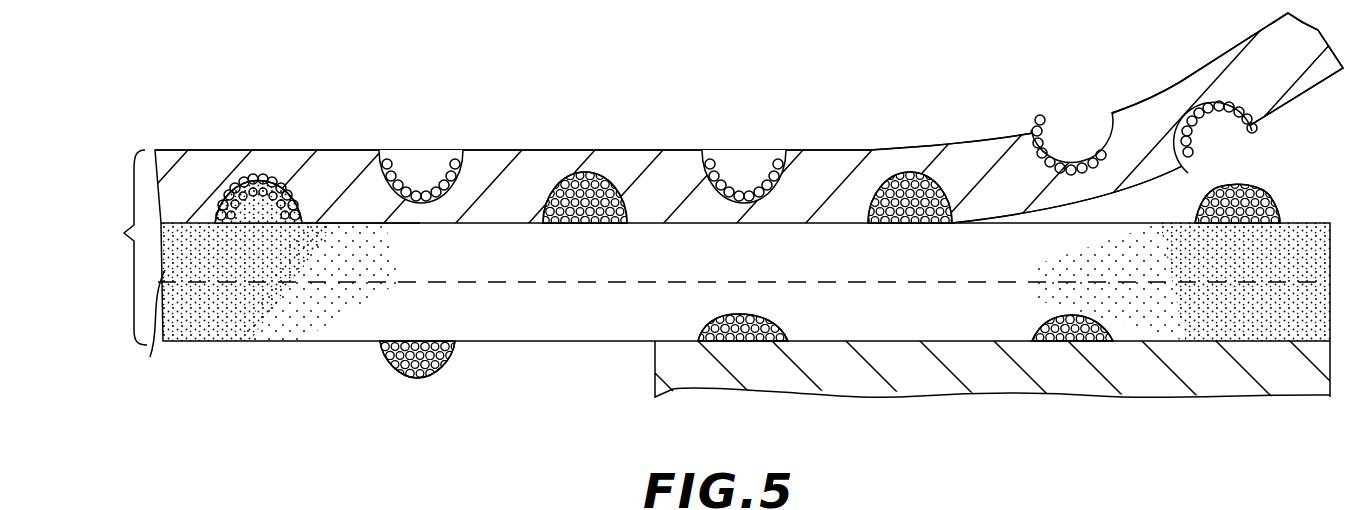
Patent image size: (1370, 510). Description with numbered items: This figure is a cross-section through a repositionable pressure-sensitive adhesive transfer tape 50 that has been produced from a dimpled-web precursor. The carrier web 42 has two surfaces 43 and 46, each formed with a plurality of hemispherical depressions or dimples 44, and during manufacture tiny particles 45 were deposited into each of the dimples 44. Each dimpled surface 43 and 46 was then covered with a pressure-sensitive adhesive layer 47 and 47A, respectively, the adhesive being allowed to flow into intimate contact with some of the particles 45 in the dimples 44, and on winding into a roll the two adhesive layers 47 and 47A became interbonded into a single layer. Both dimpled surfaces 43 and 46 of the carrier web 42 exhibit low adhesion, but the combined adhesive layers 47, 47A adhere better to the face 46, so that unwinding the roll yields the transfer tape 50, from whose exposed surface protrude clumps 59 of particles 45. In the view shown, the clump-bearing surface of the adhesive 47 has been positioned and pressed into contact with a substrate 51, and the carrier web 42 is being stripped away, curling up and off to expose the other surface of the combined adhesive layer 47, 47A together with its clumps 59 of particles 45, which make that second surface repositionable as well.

The carrier web 42 is at (332, 168).
The dimpled surface 43 is at (512, 150).
The hemispherical depressions or dimples 44 is at (777, 147).
The particles 45 is at (733, 187).
The dimpled surface 46 is at (1297, 103).
The pressure-sensitive adhesive layer 47 is at (263, 333).
The pressure-sensitive adhesive layer 47A is at (163, 333).
The pressure-sensitive adhesive transfer tape 50 is at (117, 247).
The substrate 51 is at (1267, 387).
The clumps of particles 59 is at (600, 180).